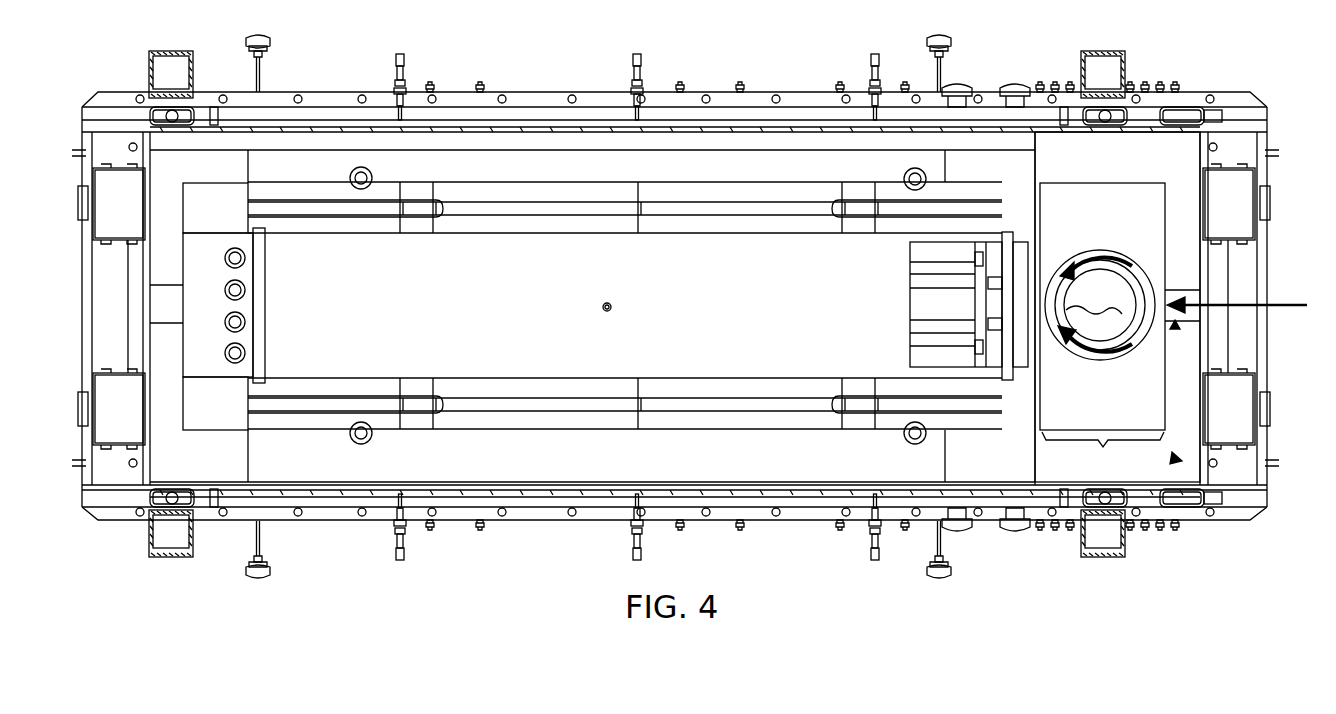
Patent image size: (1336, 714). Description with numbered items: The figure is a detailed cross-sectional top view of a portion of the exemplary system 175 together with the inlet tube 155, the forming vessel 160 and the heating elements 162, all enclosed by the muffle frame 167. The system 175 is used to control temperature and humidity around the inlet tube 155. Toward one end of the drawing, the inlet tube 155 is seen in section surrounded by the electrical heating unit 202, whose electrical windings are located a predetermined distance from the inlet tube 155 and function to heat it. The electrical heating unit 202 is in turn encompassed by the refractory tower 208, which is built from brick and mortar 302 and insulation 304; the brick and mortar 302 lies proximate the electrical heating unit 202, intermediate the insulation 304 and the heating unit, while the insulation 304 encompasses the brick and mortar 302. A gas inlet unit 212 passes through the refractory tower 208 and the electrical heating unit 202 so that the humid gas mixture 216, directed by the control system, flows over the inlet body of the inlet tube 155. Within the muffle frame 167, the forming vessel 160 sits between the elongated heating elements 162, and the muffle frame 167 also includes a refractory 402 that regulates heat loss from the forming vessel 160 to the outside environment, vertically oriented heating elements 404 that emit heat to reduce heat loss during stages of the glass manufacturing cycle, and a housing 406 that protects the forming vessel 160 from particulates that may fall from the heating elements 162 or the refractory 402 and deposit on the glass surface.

The inlet tube 155 is at (1108, 320).
The forming vessel 160 is at (918, 352).
The heating elements 162 is at (490, 233).
The muffle frame 167 is at (132, 92).
The system 175 is at (1103, 453).
The electrical heating unit 202 is at (1068, 268).
The refractory tower 208 is at (1177, 458).
The gas inlet unit 212 is at (1177, 328).
The humid gas mixture 216 is at (1128, 264).
The brick and mortar 302 is at (1140, 207).
The insulation 304 is at (1134, 167).
The refractory 402 is at (505, 152).
The vertically oriented heating elements 404 is at (360, 170).
The housing 406 is at (714, 233).